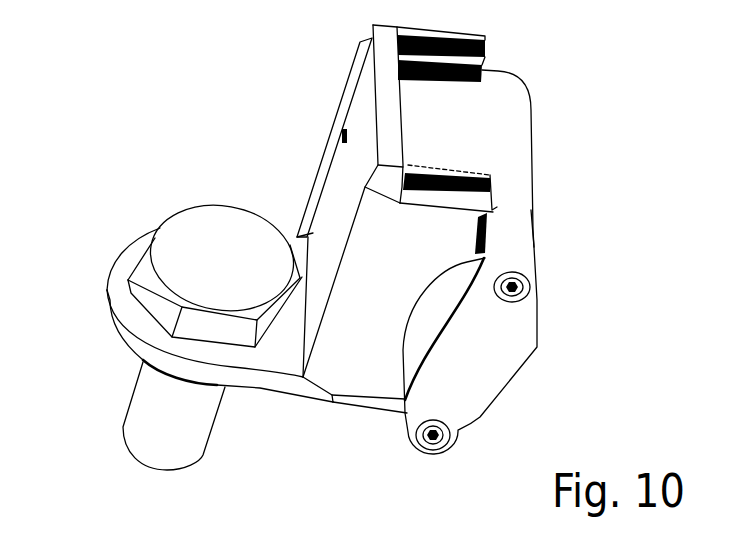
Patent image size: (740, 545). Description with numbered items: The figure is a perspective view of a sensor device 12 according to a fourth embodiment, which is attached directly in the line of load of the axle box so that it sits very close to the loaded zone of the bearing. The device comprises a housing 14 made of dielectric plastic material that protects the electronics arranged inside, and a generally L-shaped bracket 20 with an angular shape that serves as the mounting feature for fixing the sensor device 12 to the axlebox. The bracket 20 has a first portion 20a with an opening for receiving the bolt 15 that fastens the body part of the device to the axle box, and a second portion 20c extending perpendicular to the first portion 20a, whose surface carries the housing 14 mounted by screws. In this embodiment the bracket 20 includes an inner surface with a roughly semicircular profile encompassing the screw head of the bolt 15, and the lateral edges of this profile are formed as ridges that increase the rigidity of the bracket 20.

The sensor device 12 is at (552, 287).
The housing 14 is at (503, 142).
The bolt 15 is at (180, 430).
The bracket 20 is at (292, 387).
The first portion 20a is at (123, 326).
The second portion 20c is at (357, 118).